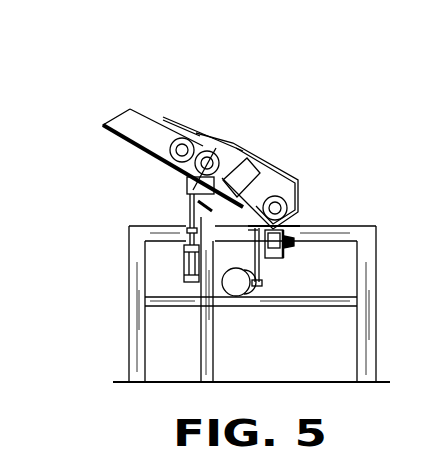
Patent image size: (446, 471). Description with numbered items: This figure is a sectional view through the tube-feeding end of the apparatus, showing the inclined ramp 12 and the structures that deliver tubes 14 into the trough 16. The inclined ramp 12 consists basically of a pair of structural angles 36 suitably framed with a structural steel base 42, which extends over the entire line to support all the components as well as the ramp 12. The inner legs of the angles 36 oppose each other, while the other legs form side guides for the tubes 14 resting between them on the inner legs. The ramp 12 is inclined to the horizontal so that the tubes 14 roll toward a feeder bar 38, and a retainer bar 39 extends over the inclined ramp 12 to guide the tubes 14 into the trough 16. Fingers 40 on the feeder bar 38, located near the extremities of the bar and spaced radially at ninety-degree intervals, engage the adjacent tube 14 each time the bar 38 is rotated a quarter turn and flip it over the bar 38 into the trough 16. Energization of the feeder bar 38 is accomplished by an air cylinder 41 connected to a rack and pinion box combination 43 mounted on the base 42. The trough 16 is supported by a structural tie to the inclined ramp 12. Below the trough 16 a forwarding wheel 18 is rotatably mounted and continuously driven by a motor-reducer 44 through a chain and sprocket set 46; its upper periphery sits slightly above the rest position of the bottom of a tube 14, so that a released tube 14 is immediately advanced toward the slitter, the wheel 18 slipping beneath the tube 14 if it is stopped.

The inclined ramp 12 is at (258, 30).
The tubes 14 is at (196, 133).
The trough 16 is at (298, 222).
The forwarding wheel 18 is at (283, 257).
The structural angles 36 is at (138, 112).
The feeder bar 38 is at (214, 198).
The retainer bar 39 is at (170, 115).
The fingers 40 is at (243, 160).
The air cylinder 41 is at (184, 270).
The structural steel base 42 is at (118, 268).
The rack and pinion box combination 43 is at (178, 186).
The motor-reducer 44 is at (236, 290).
The chain and sprocket set 46 is at (270, 270).